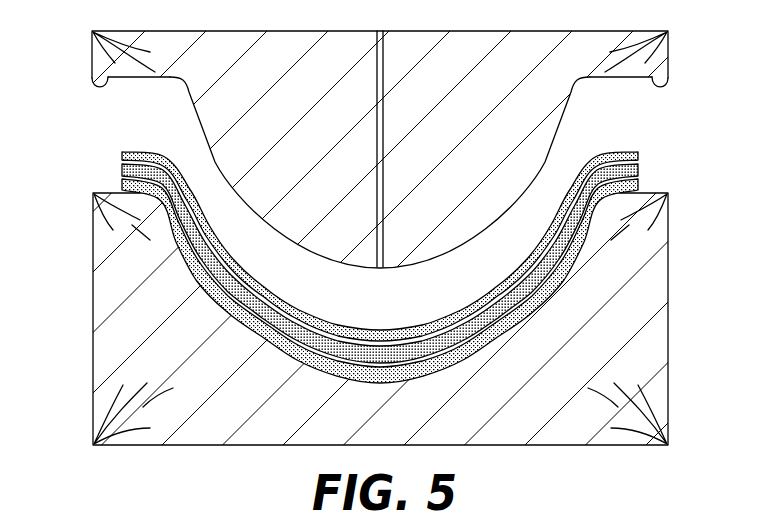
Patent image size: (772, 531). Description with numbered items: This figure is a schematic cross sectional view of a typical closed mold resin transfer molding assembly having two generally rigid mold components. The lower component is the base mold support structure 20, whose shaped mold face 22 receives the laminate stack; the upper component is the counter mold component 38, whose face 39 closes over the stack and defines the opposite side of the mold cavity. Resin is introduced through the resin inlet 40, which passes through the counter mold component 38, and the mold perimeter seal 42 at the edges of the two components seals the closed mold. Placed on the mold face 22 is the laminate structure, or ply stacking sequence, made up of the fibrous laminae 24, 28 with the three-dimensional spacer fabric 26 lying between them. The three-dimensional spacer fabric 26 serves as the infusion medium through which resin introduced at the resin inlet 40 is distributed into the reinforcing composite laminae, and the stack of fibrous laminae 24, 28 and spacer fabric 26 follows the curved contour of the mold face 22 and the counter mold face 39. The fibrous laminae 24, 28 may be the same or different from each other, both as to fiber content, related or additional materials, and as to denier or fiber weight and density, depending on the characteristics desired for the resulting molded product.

The base mold support structure 20 is at (585, 379).
The mold face 22 is at (425, 257).
The fibrous lamina 24 is at (638, 183).
The three-dimensional spacer fabric 26 is at (638, 169).
The fibrous lamina 28 is at (638, 155).
The counter mold component 38 is at (492, 167).
The counter mold face 39 is at (299, 244).
The resin inlet 40 is at (383, 90).
The mold perimeter seal 42 is at (100, 87).